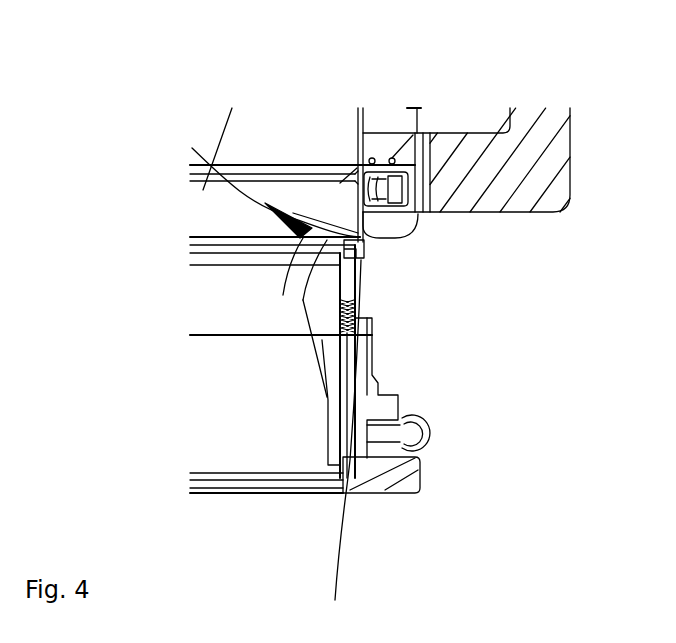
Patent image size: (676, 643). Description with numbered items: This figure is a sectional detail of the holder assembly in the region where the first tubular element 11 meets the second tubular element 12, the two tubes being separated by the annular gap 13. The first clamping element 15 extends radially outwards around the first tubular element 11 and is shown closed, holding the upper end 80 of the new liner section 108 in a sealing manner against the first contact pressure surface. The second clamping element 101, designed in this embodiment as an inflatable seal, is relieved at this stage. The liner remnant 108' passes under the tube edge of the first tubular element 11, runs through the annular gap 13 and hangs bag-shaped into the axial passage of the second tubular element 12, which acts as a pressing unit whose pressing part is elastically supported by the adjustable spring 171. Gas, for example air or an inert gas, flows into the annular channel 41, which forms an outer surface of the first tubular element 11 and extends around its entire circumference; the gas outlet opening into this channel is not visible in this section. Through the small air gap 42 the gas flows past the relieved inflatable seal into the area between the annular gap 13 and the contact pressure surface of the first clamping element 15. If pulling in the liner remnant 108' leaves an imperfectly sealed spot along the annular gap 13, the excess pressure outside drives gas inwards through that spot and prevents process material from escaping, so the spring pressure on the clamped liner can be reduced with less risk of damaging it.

The first tubular element 11 is at (163, 27).
The second tubular element 12 is at (163, 243).
The annular gap 13 is at (375, 250).
The first clamping element 15 is at (437, 216).
The annular channel 41 is at (372, 153).
The air gap 42 is at (360, 162).
The upper end of the new liner section 80 is at (417, 120).
The second clamping element 101 is at (398, 218).
The new liner section 108 is at (377, 381).
The liner remnant 108' is at (448, 312).
The adjustable spring 171 is at (367, 343).